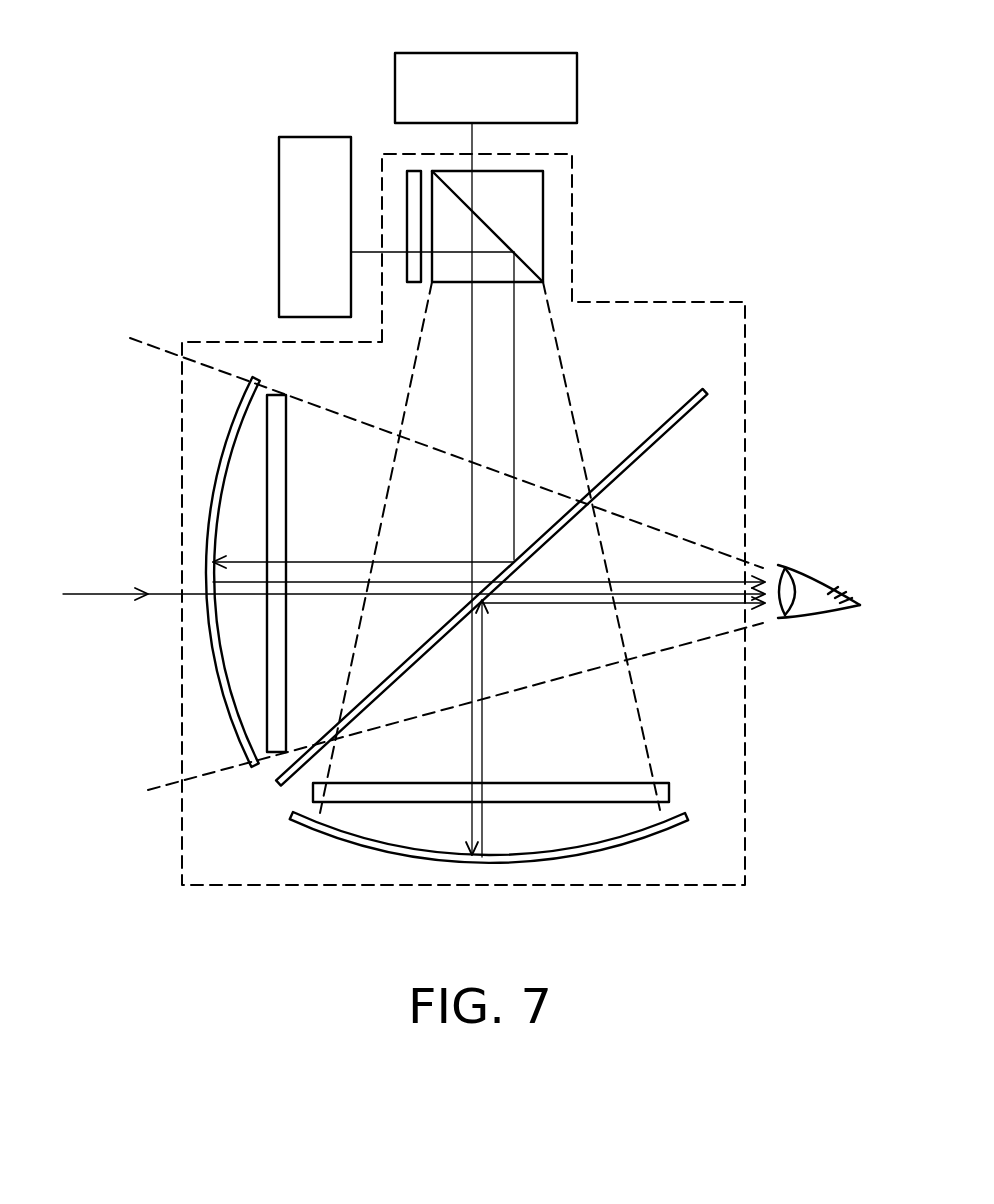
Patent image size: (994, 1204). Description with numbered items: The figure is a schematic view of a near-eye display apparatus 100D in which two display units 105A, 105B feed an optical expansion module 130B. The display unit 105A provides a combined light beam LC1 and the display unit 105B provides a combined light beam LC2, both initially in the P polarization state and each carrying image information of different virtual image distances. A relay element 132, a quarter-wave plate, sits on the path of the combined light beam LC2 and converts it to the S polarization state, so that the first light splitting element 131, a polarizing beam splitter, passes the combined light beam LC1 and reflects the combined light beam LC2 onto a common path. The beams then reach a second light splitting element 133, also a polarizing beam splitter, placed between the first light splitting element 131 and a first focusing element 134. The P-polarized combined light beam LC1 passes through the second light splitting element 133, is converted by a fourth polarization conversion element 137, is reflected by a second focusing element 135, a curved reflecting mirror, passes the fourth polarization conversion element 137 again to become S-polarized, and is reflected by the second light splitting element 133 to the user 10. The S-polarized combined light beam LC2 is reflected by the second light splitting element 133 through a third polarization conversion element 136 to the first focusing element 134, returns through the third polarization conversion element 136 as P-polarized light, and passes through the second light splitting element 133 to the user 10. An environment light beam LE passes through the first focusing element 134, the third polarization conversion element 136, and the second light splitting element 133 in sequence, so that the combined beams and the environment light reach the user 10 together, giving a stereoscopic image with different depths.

The near-eye display apparatus 100D is at (898, 935).
The optical expansion module 130B is at (707, 300).
The display unit 105A is at (565, 90).
The display unit 105B is at (297, 216).
The combined light beam LC1 is at (471, 139).
The combined light beam LC2 is at (367, 251).
The relay element 132 is at (412, 183).
The first light splitting element 131 is at (543, 212).
The second light splitting element 133 is at (705, 388).
The first focusing element 134 is at (237, 737).
The second focusing element 135 is at (687, 813).
The third polarization conversion element 136 is at (277, 690).
The fourth polarization conversion element 137 is at (628, 792).
The environment light beam LE is at (414, 575).
The user 10 is at (838, 560).